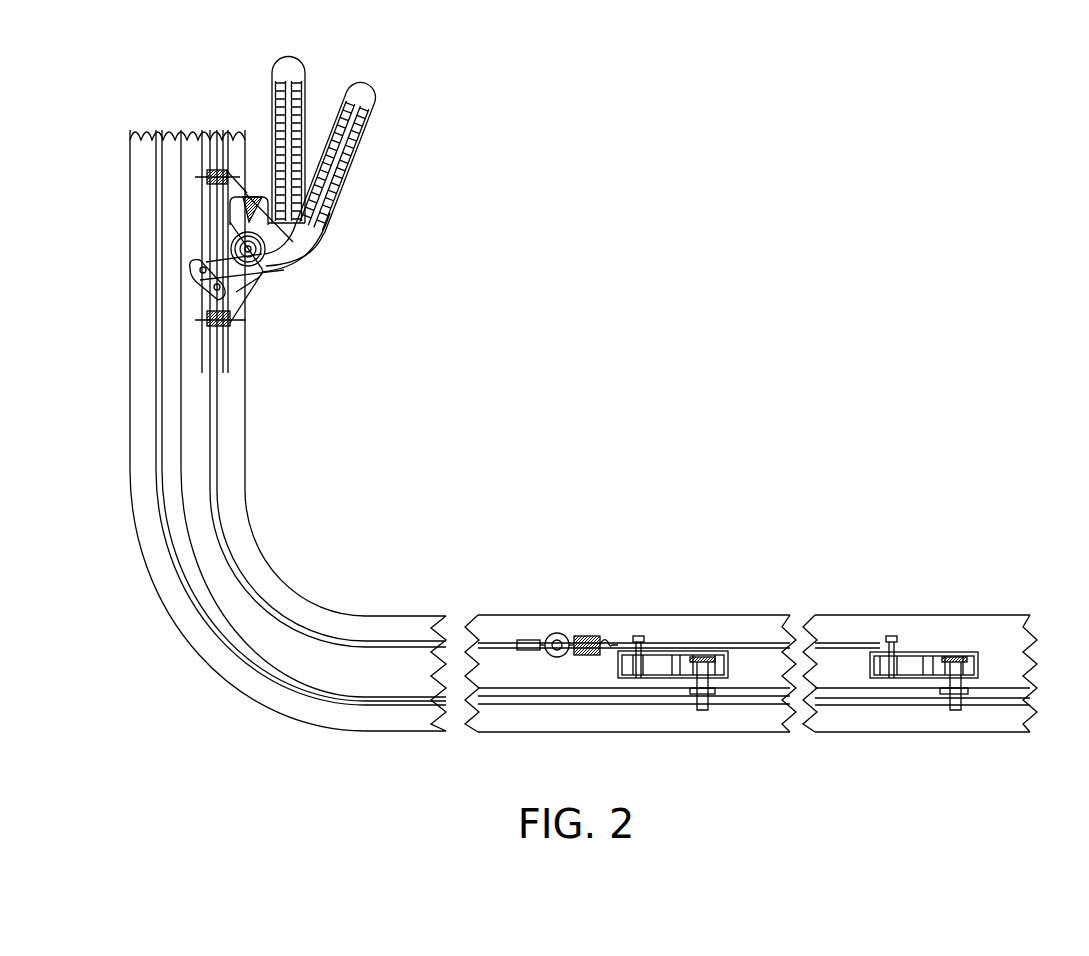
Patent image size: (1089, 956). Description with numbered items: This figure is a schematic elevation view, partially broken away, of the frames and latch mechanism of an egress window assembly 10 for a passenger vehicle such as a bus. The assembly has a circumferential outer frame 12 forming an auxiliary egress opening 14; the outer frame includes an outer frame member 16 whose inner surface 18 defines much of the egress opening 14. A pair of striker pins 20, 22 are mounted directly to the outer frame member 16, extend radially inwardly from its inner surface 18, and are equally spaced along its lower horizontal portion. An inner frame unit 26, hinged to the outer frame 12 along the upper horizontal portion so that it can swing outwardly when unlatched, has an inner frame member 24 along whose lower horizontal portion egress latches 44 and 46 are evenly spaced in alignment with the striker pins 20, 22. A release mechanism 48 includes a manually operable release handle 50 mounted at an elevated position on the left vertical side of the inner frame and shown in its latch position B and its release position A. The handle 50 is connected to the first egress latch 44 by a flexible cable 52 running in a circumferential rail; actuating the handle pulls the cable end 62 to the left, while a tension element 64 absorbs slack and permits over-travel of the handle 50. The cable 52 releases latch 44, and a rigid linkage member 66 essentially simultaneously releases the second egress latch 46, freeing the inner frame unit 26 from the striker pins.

The egress window assembly 10 is at (284, 739).
The outer frame 12 is at (182, 630).
The egress opening 14 is at (376, 700).
The outer frame member 16 is at (143, 433).
The inner surface 18 is at (156, 395).
The striker pin 20 is at (702, 668).
The striker pin 22 is at (951, 708).
The inner frame member 24 is at (385, 622).
The inner frame unit 26 is at (722, 612).
The first egress latch 44 is at (657, 665).
The second egress latch 46 is at (910, 651).
The release mechanism 48 is at (331, 256).
The release handle 50 is at (336, 160).
The flexible cable 52 is at (219, 450).
The end of flexible cable 62 is at (553, 633).
The tension element 64 is at (583, 633).
The linkage member 66 is at (840, 641).
The release position A is at (372, 118).
The latch position B is at (304, 72).